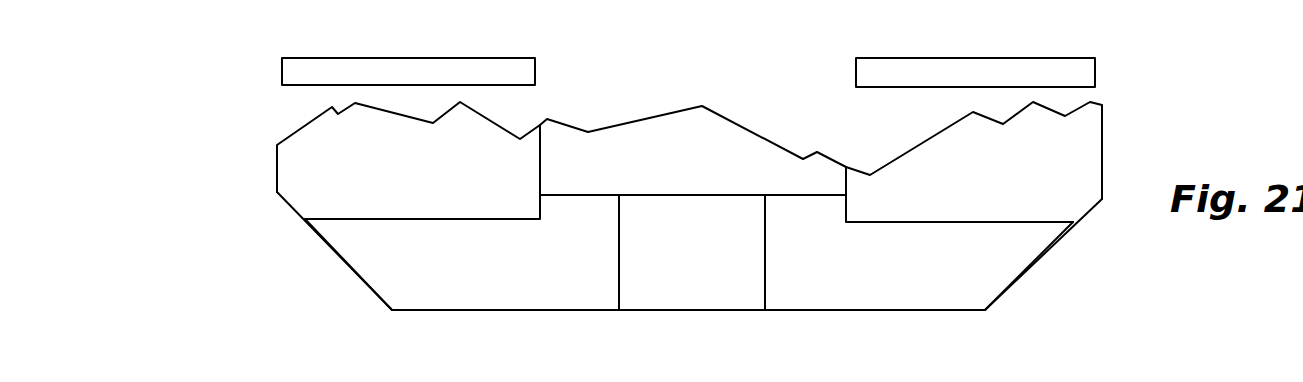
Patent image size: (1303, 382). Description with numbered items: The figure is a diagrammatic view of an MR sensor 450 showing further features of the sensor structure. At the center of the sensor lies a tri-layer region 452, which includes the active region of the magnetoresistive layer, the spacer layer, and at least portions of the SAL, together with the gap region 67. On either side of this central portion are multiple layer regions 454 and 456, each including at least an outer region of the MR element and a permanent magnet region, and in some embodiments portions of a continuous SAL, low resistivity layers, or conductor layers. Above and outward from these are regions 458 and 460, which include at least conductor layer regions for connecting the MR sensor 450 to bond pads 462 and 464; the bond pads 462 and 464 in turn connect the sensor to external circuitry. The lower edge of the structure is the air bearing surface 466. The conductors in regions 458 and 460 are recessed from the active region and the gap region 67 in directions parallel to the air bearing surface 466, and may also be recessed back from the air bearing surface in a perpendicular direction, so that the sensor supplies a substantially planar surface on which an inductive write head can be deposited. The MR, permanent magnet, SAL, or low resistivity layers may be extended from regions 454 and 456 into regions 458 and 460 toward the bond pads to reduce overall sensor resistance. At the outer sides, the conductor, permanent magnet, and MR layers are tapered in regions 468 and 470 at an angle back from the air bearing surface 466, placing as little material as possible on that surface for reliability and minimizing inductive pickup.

The MR sensor 450 is at (240, 53).
The tri-layer region 452 is at (732, 282).
The multiple layer region 454 is at (507, 290).
The multiple layer region 456 is at (967, 277).
The conductor layer region 458 is at (308, 198).
The conductor layer region 460 is at (1082, 130).
The bond pad 462 is at (512, 70).
The bond pad 464 is at (1075, 75).
The air bearing surface 466 is at (633, 311).
The tapered region 468 is at (357, 272).
The tapered region 470 is at (1047, 257).
The gap region 67 is at (718, 317).